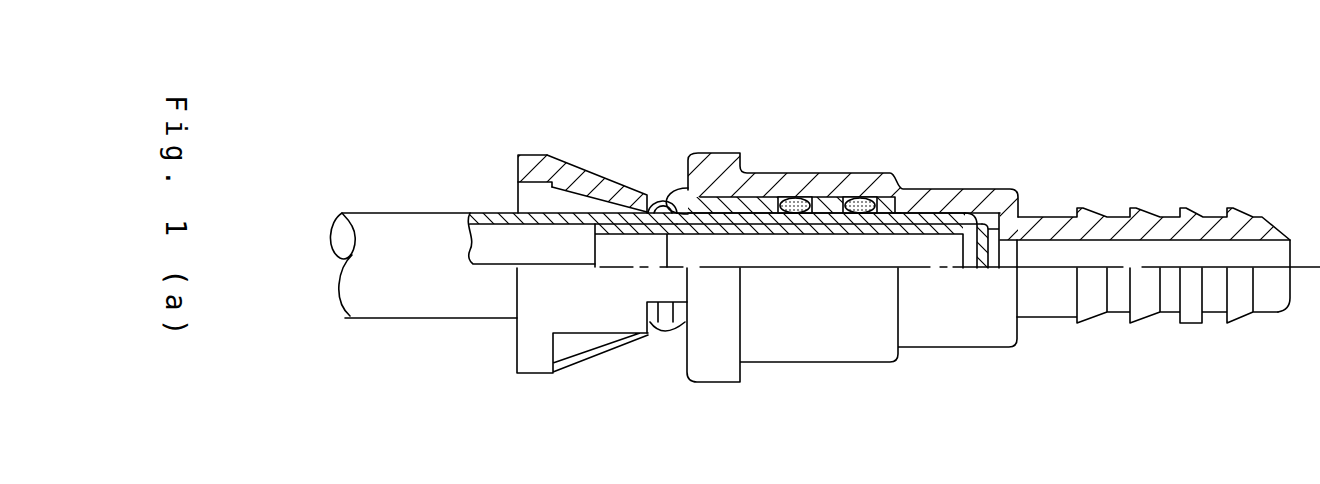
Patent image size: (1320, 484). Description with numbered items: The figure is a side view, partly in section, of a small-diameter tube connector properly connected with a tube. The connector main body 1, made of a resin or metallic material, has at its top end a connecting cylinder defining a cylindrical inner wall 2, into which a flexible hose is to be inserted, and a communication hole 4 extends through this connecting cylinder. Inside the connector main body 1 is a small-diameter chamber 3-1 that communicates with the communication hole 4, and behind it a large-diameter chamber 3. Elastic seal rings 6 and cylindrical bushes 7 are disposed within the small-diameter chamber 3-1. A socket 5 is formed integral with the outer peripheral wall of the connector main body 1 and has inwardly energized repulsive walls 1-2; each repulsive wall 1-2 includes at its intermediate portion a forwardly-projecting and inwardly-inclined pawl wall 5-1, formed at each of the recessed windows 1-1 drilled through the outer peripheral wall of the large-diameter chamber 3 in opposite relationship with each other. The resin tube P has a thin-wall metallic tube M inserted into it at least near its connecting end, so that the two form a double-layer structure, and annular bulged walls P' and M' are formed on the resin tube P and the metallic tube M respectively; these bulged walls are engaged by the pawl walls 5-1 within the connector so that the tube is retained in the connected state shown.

The resin tube P is at (501, 221).
The annular bulged wall P' is at (690, 153).
The connector main body 1 is at (818, 173).
The recessed window 1-1 is at (518, 183).
The repulsive wall 1-2 is at (537, 155).
The cylindrical inner wall 2 is at (1158, 230).
The large-diameter chamber 3 is at (525, 199).
The small-diameter chamber 3-1 is at (958, 232).
The communication hole 4 is at (1274, 262).
The socket 5 is at (583, 168).
The pawl wall 5-1 is at (635, 197).
The elastic seal ring 6 is at (798, 199).
The cylindrical bush 7 is at (718, 207).
The thin-wall metallic tube M is at (920, 137).
The annular bulged wall M' is at (674, 138).